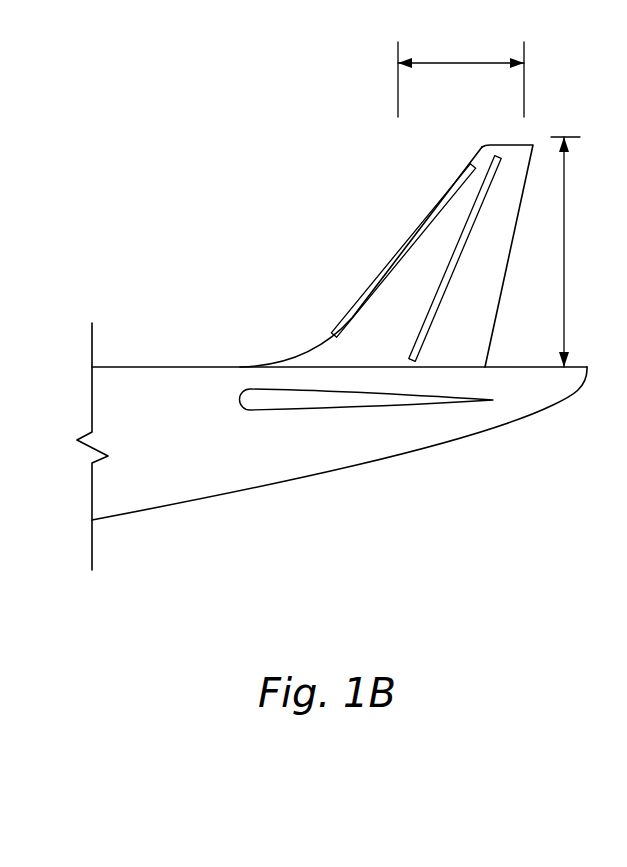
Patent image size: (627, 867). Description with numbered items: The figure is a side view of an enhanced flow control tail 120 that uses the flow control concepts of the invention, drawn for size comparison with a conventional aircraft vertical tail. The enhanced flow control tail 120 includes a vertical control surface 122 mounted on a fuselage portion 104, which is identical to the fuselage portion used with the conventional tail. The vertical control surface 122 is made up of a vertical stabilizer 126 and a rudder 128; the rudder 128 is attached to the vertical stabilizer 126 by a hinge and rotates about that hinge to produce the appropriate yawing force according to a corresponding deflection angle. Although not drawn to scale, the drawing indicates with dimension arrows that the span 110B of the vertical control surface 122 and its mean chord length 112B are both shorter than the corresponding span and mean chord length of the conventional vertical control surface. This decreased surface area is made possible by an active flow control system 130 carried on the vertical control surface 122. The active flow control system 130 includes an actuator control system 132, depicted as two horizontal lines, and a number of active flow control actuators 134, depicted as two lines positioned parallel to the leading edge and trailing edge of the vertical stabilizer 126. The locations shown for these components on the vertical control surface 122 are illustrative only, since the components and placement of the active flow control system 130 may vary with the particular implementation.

The enhanced flow control tail 120 is at (166, 81).
The fuselage portion 104 is at (125, 380).
The vertical control surface 122 is at (268, 255).
The vertical stabilizer 126 is at (382, 330).
The rudder 128 is at (460, 337).
The active flow control system 130 is at (303, 131).
The actuator control system 132 is at (460, 218).
The active flow control actuators 134 is at (485, 185).
The mean chord length 112B is at (461, 74).
The span 110B is at (584, 252).